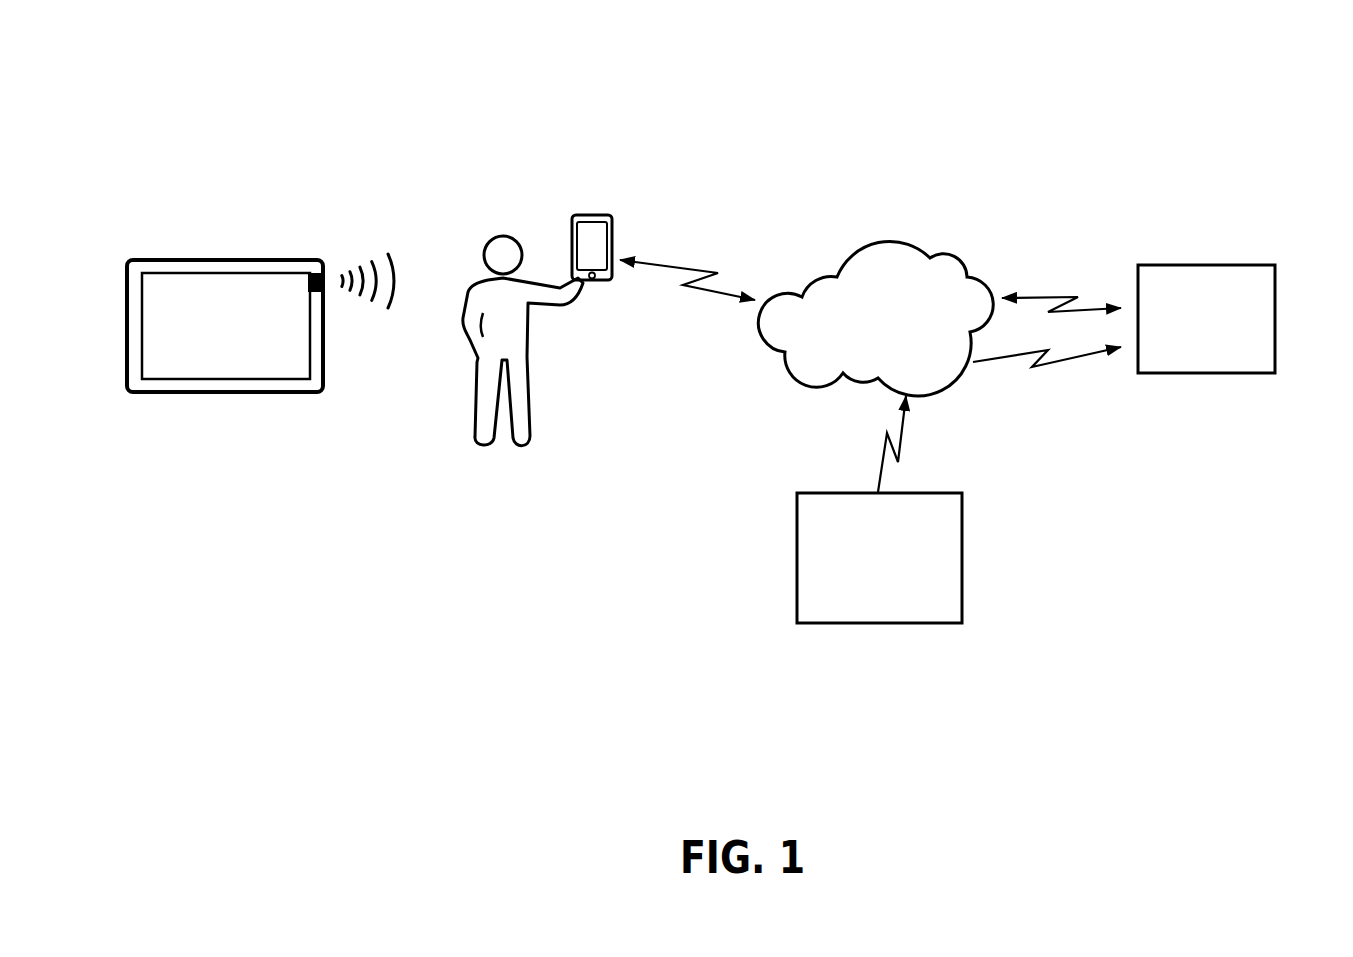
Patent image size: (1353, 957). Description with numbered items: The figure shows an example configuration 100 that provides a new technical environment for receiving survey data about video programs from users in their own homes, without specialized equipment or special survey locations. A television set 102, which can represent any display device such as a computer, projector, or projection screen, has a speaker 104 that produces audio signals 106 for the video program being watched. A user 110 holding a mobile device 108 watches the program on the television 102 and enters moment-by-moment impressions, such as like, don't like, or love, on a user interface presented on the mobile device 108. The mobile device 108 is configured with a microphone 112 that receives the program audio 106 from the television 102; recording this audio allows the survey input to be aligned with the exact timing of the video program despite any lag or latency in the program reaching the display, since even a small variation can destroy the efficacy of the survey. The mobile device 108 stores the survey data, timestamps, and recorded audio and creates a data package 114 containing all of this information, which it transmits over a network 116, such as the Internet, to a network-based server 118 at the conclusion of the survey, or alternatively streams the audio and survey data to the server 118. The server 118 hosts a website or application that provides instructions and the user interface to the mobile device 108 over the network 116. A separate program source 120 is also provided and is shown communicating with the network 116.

The configuration 100 is at (210, 128).
The television set 102 is at (235, 260).
The speaker 104 is at (315, 292).
The audio signals 106 is at (384, 251).
The mobile device 108 is at (597, 215).
The user 110 is at (508, 236).
The microphone 112 is at (594, 284).
The data package 114 is at (707, 358).
The network 116 is at (960, 254).
The network-based server 118 is at (1220, 265).
The program source 120 is at (963, 553).